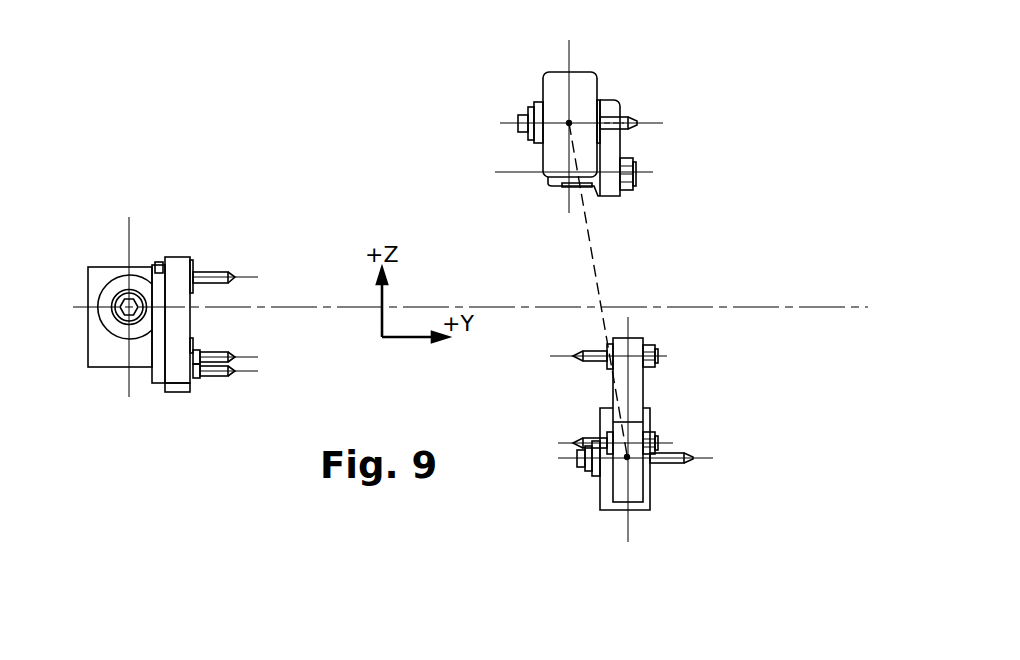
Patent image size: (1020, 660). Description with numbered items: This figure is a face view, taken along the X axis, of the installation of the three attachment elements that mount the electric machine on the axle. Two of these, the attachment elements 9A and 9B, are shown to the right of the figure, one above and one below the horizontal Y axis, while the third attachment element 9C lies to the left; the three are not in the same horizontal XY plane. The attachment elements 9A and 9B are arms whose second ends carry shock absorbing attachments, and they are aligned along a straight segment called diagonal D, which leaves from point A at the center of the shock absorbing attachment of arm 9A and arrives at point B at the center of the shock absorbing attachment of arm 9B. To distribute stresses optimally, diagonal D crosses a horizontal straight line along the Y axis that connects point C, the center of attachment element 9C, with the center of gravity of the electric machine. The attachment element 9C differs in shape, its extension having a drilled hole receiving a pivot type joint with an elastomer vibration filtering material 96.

The attachment element 9A is at (560, 72).
The attachment element 9B is at (655, 508).
The attachment element 9C is at (112, 367).
The vibration filtering material 96 is at (110, 287).
The point A is at (569, 123).
The point B is at (627, 457).
The point C is at (108, 340).
The diagonal D is at (588, 232).